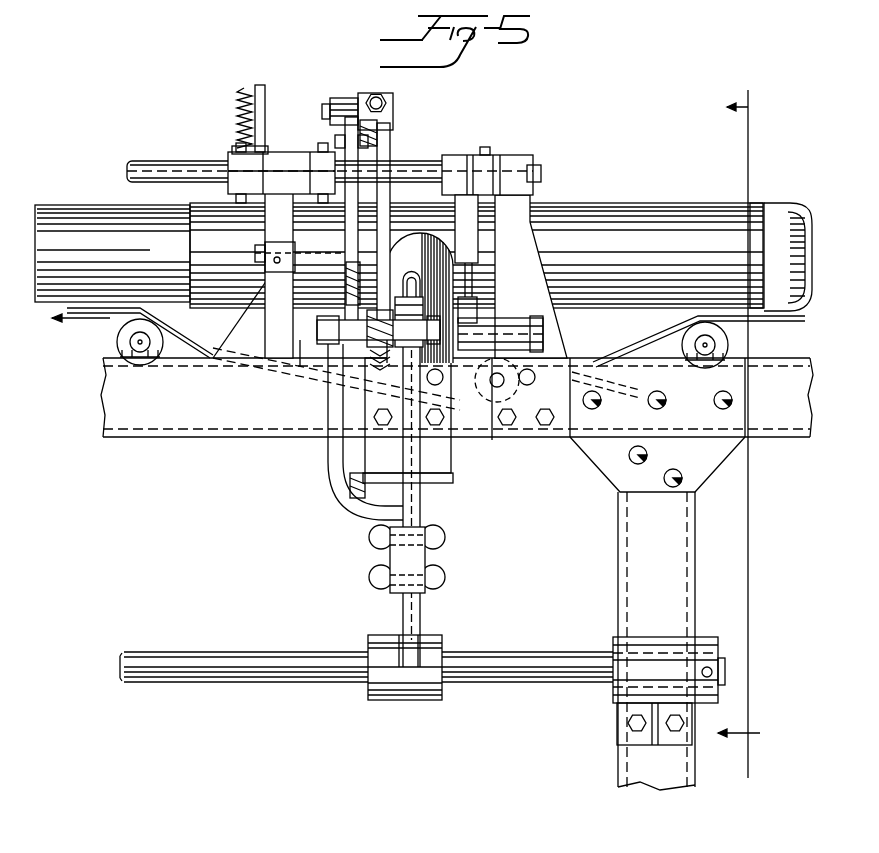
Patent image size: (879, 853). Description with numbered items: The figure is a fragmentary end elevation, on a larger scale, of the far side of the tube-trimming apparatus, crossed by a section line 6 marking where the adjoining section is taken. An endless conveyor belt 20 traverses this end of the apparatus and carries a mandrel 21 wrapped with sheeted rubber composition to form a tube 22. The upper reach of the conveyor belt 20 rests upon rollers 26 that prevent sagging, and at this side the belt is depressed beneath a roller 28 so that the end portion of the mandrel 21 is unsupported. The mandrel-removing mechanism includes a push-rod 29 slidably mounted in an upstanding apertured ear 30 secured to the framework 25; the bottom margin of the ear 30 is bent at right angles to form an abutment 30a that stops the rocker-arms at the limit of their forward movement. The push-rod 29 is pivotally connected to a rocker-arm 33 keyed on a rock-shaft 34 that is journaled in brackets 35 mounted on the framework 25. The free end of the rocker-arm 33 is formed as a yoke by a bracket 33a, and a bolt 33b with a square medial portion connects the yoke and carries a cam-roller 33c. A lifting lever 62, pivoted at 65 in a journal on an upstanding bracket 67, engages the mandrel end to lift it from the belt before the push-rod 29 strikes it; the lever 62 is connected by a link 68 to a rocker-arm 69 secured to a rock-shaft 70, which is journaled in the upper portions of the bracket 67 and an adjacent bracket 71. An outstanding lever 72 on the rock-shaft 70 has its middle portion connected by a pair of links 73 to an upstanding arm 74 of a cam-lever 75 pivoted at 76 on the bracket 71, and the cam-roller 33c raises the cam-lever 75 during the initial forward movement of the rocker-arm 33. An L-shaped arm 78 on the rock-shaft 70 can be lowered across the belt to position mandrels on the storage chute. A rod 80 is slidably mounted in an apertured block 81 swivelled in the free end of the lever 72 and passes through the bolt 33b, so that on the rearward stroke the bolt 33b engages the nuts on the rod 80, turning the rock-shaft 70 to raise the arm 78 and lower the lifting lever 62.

The section line 6- 6 is at (741, 432).
The endless conveyor belt 20 is at (788, 323).
The mandrel 21 is at (788, 211).
The tube 22 is at (706, 207).
The framework 25 is at (604, 434).
The rollers 26 is at (117, 340).
The roller 28 is at (461, 432).
The push-rod 29 is at (420, 287).
The upstanding apertured ear 30 is at (420, 298).
The abutment 30a is at (437, 482).
The rocker-arm 33 is at (407, 600).
The bracket 33a is at (330, 466).
The bolt 33b is at (303, 362).
The cam-roller 33c is at (332, 384).
The rock-shaft 34 is at (263, 653).
The bracket 35 is at (645, 637).
The lifting lever 62 is at (480, 318).
The pivot 65 is at (546, 331).
The upstanding bracket 67 is at (516, 213).
The link 68 is at (470, 272).
The rocker-arm 69 is at (485, 190).
The rock-shaft 70 is at (163, 163).
The bracket 71 is at (336, 345).
The outstanding lever 72 is at (314, 153).
The links 73 is at (362, 172).
The upstanding arm 74 is at (357, 227).
The cam-lever 75 is at (349, 285).
The pivot 76 is at (258, 253).
The L-shaped arm 78 is at (262, 100).
The rod 80 is at (392, 172).
The apertured block 81 is at (393, 108).